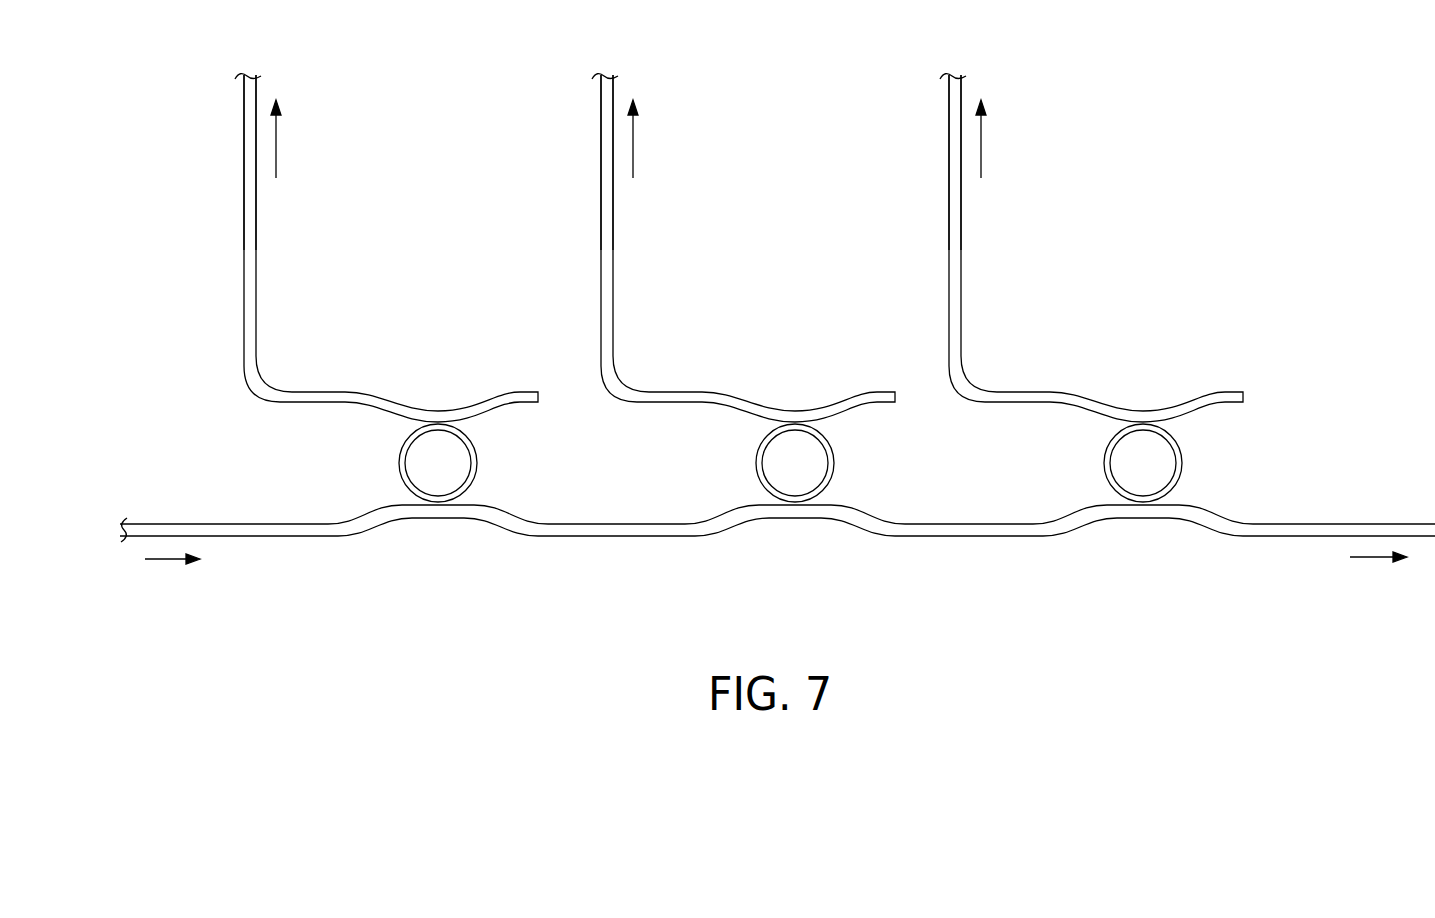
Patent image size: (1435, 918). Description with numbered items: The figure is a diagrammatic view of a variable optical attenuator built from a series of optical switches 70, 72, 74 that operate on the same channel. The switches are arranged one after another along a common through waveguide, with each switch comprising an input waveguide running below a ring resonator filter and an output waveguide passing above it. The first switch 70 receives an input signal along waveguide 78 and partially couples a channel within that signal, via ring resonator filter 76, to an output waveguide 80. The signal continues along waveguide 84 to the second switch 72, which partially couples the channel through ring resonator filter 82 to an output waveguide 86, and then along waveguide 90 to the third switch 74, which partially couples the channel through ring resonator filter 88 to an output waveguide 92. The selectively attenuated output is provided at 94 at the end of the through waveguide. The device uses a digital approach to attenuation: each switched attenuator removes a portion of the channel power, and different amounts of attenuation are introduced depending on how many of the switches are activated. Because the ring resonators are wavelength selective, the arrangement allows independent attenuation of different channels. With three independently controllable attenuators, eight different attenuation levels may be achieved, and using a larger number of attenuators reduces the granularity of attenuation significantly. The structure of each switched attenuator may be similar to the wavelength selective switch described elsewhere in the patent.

The switch 70 is at (453, 385).
The switch 72 is at (810, 387).
The switch 74 is at (1160, 384).
The ring resonator filter 76 is at (399, 463).
The waveguide 78 is at (332, 537).
The output waveguide 80 is at (256, 218).
The ring resonator filter 82 is at (756, 463).
The waveguide 84 is at (694, 537).
The output waveguide 86 is at (613, 218).
The ring resonator filter 88 is at (1104, 463).
The waveguide 90 is at (1050, 537).
The output waveguide 92 is at (961, 218).
The selectively attenuated output 94 is at (1381, 522).